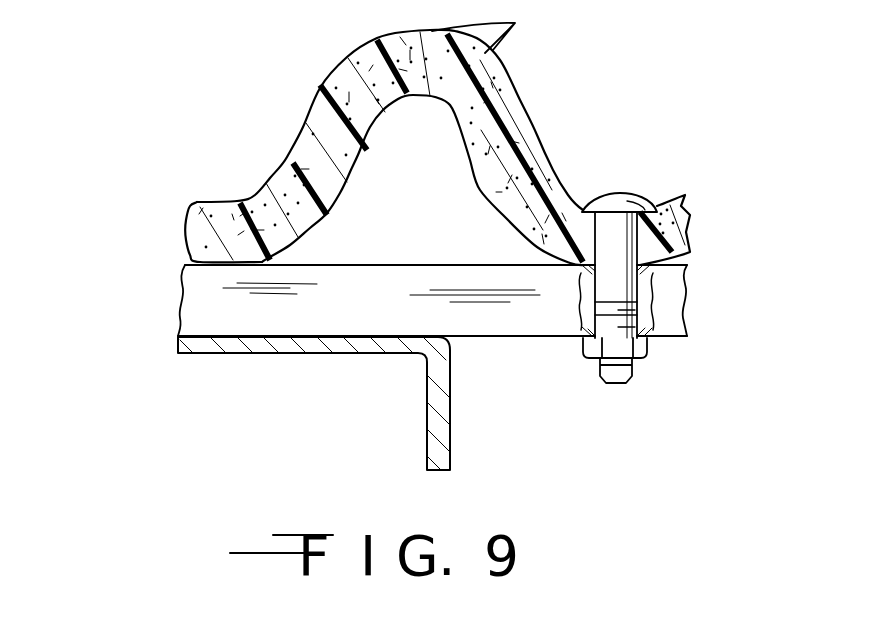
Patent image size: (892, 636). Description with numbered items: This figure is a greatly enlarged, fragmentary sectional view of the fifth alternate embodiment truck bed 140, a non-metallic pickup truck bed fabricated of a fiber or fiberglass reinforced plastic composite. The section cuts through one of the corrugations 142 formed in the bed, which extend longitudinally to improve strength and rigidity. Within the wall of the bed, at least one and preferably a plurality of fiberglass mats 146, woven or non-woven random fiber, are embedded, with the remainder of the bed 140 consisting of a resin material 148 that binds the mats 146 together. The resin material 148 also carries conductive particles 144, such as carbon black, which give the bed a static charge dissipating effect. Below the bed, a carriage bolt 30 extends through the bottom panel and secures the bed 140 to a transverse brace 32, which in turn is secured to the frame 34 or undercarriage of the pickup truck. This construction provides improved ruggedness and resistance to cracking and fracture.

The fifth alternate embodiment truck bed 140 is at (226, 170).
The corrugations 142 is at (510, 102).
The conductive particles 144 is at (510, 30).
The fiberglass mats 146 is at (318, 153).
The resin material 148 is at (517, 177).
The carriage bolt 30 is at (627, 198).
The transverse brace 32 is at (512, 322).
The frame 34 is at (427, 423).